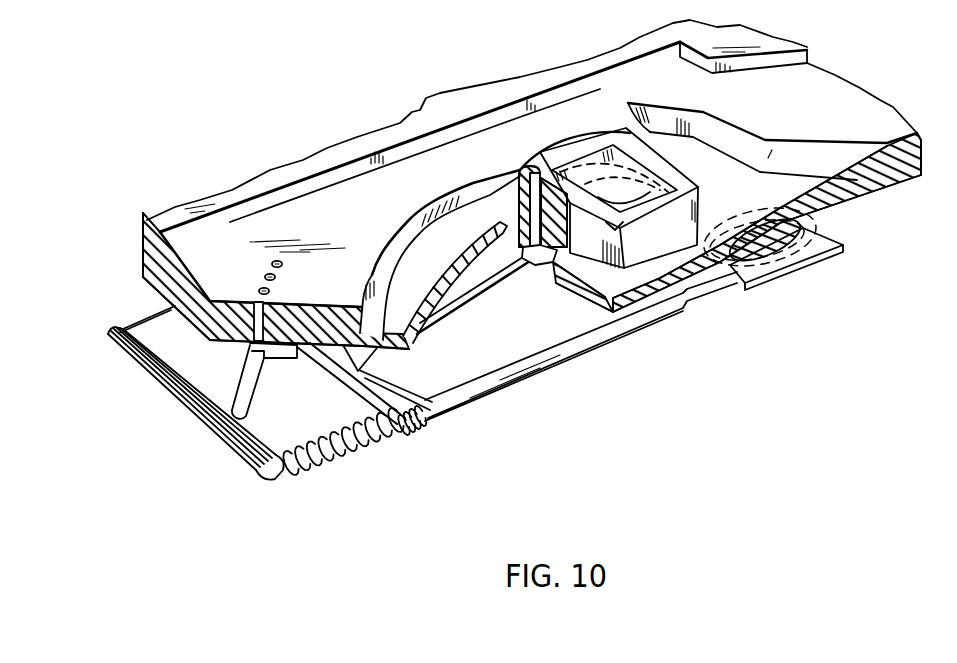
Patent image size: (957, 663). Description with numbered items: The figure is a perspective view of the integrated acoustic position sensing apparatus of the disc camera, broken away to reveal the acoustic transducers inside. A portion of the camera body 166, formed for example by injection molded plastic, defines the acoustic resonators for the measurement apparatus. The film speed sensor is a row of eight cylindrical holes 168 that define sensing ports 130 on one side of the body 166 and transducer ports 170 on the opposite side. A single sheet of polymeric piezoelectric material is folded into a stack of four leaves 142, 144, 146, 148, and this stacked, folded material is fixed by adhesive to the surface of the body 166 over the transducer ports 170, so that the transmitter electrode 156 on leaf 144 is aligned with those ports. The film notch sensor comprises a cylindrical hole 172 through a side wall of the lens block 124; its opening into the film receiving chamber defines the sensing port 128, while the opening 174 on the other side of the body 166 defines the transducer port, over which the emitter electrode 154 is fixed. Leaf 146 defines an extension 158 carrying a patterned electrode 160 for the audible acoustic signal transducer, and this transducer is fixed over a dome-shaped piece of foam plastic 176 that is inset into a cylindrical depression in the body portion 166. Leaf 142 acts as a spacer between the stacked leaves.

The lens block 124 is at (580, 150).
The sensing port 128 is at (520, 165).
The sensing ports 130 is at (270, 291).
The leaf 142 is at (248, 457).
The leaf 144 is at (255, 465).
The leaf 146 is at (225, 452).
The leaf 148 is at (207, 436).
The patterned electrode 154 is at (533, 262).
The patterned electrode 156 is at (240, 387).
The extension 158 is at (827, 243).
The patterned electrode 160 is at (787, 277).
The camera body 166 is at (304, 203).
The cylindrical holes 168 is at (257, 304).
The transducer ports 170 is at (247, 346).
The cylindrical hole 172 is at (512, 188).
The opening 174 is at (541, 265).
The dome-shaped piece of foam plastic 176 is at (744, 255).